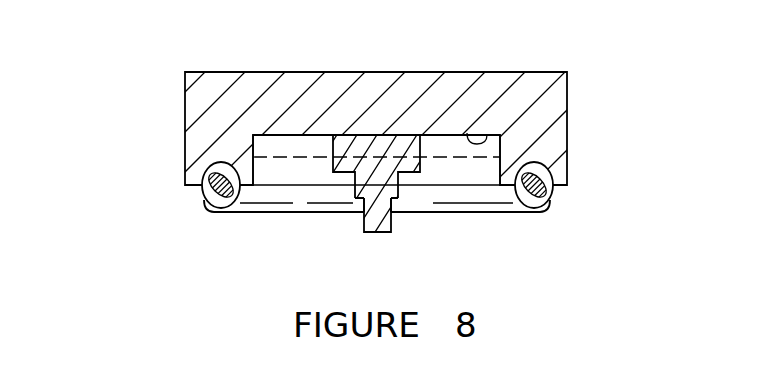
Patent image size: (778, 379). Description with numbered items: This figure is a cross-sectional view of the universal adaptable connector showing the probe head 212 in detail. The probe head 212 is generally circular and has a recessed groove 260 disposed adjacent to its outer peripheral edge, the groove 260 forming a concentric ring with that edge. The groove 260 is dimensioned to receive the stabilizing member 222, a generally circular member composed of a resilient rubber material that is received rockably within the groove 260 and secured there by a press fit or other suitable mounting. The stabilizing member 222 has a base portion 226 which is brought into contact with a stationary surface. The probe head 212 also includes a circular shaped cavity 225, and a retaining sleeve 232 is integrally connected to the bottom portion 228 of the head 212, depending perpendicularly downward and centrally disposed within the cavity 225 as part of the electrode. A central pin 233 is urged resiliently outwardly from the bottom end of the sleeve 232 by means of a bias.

The probe head 212 is at (146, 88).
The stabilizing member 222 is at (303, 198).
The cavity 225 is at (445, 148).
The base portion 226 is at (425, 205).
The bottom portion 228 is at (467, 133).
The sleeve 232 is at (333, 150).
The central pin 233 is at (363, 217).
The groove 260 is at (203, 162).